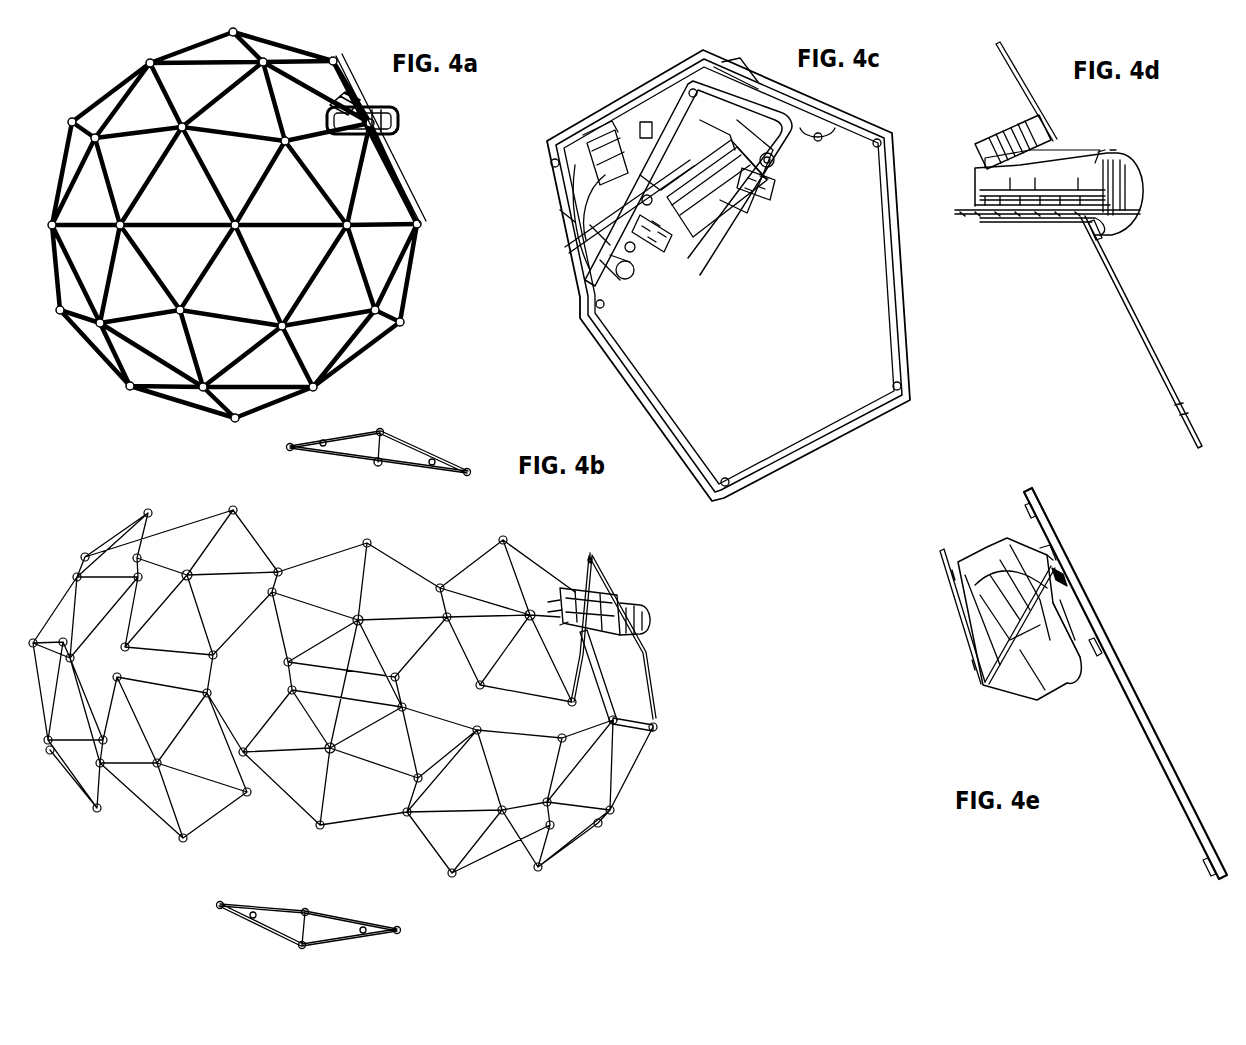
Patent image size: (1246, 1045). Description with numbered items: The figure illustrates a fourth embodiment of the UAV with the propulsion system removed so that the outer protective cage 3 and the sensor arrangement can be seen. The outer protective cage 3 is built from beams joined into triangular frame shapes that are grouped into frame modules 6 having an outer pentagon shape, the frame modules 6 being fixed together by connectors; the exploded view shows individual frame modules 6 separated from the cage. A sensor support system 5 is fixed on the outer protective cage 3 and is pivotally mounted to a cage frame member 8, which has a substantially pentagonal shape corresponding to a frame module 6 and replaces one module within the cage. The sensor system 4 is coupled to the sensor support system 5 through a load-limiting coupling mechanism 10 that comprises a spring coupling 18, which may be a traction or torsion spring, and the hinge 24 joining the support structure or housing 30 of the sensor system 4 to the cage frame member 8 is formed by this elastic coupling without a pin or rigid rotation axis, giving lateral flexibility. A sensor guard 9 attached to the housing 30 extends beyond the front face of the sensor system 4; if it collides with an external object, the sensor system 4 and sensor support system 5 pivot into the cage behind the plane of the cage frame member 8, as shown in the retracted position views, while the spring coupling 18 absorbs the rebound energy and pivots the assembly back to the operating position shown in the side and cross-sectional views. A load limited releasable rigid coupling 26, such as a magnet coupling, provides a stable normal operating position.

In FIG. 4a, the outer protective cage 3 is at (378, 362).
In FIG. 4a, the sensor system 4 is at (396, 144).
In FIG. 4b, the sensor system 4 is at (626, 642).
In FIG. 4c, the sensor system 4 is at (717, 238).
In FIG. 4d, the sensor system 4 is at (1058, 232).
In FIG. 4e, the sensor system 4 is at (958, 623).
In FIG. 4a, the sensor support system 5 is at (403, 164).
In FIG. 4b, the sensor support system 5 is at (628, 587).
In FIG. 4d, the sensor support system 5 is at (1072, 127).
In FIG. 4b, the frame module 6 is at (397, 484).
In FIG. 4c, the cage frame member 8 is at (921, 300).
In FIG. 4d, the cage frame member 8 is at (1118, 277).
In FIG. 4e, the cage frame member 8 is at (1140, 707).
In FIG. 4e, the sensor guard 9 is at (1067, 675).
In FIG. 4d, the load-limiting coupling mechanism 10 is at (982, 116).
In FIG. 4d, the spring coupling 18 is at (1023, 123).
In FIG. 4e, the spring coupling 18 is at (1052, 580).
In FIG. 4e, the hinge 24 is at (1052, 572).
In FIG. 4e, the load limited releasable rigid coupling 26 is at (1085, 645).
In FIG. 4e, the support structure or housing 30 is at (973, 570).